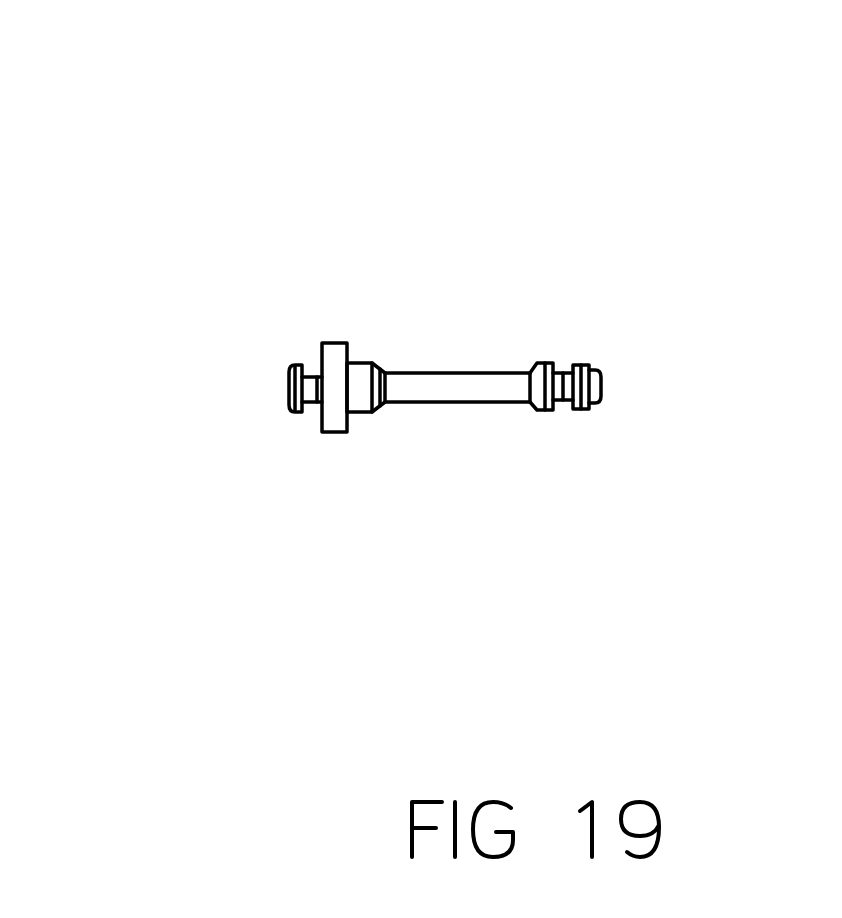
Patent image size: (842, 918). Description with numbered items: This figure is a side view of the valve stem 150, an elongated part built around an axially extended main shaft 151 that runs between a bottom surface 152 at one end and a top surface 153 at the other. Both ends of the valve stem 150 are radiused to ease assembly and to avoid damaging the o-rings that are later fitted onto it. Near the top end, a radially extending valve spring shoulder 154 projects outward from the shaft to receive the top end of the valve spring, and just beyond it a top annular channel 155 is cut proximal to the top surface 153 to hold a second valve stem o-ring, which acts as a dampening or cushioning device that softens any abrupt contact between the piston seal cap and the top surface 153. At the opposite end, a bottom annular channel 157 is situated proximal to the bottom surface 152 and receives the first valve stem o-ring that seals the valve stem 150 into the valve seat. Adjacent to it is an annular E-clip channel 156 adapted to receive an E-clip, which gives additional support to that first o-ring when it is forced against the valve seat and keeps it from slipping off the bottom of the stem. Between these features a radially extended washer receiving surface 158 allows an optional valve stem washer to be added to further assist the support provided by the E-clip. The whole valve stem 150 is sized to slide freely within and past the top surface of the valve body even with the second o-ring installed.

The valve stem 150 is at (428, 345).
The main shaft 151 is at (537, 209).
The bottom surface 152 is at (702, 433).
The top surface 153 is at (171, 452).
The valve spring shoulder 154 is at (459, 517).
The top annular channel 155 is at (196, 508).
The annular E-clip channel 156 is at (674, 493).
The bottom annular channel 157 is at (634, 291).
The washer receiving surface 158 is at (670, 338).